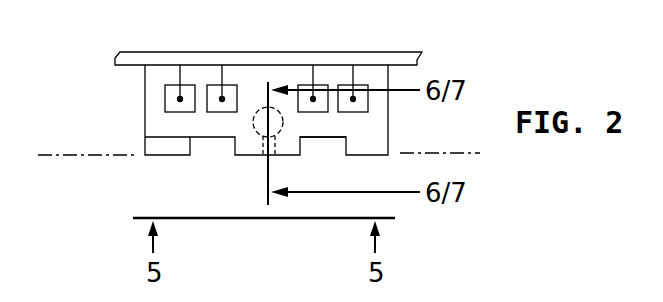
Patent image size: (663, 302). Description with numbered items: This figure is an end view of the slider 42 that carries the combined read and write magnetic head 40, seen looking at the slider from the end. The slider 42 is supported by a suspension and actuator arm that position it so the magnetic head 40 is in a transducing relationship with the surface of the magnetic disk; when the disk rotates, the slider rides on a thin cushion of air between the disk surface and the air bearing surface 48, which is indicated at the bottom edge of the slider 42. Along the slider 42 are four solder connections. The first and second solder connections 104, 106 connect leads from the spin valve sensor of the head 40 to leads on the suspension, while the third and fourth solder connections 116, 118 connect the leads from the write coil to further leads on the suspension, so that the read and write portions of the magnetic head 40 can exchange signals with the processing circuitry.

The slider 42 is at (145, 100).
The first solder connection 104 is at (165, 85).
The third solder connection 116 is at (207, 85).
The fourth solder connection 118 is at (298, 85).
The second solder connection 106 is at (338, 85).
The magnetic head 40 is at (258, 137).
The air bearing surface (ABS) 48 is at (68, 157).